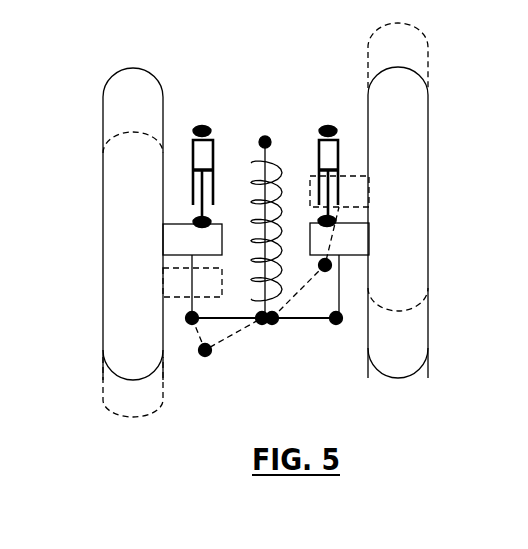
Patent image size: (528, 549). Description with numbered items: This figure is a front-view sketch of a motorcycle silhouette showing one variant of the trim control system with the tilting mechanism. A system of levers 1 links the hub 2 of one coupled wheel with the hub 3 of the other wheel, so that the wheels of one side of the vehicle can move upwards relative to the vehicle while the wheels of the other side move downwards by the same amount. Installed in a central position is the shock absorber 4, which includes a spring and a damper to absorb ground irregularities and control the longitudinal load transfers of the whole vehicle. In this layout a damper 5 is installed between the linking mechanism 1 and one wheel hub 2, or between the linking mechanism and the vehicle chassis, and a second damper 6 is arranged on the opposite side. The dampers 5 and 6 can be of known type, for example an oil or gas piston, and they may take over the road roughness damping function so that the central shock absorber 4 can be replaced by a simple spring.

The system of levers 1 is at (283, 312).
The wheel hub 2 is at (176, 288).
The wheel hub 3 is at (355, 239).
The central shock absorber 4 is at (268, 138).
The damper 5 is at (199, 126).
The damper 6 is at (330, 128).